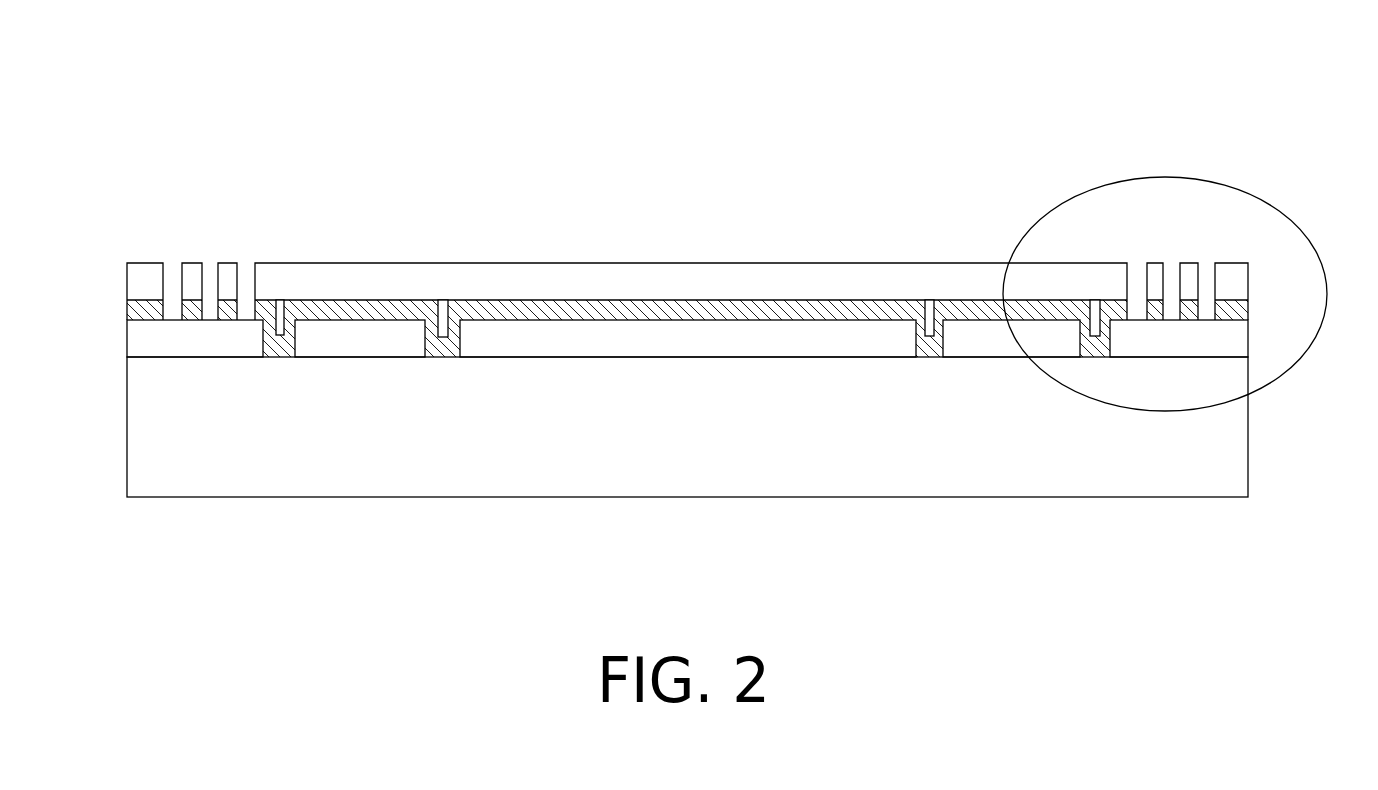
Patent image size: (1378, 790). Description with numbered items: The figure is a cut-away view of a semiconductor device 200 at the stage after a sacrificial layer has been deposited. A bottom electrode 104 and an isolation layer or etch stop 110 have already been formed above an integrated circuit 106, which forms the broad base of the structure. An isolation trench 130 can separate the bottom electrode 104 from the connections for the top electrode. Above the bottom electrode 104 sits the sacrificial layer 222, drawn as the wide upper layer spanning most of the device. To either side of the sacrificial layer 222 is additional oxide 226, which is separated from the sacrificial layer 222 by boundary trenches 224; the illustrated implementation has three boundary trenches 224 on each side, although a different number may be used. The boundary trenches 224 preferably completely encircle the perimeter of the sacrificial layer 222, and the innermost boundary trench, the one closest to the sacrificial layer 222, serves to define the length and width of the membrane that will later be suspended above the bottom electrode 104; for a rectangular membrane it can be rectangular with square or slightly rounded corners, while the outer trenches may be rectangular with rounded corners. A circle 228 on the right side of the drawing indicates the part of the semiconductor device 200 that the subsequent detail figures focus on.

The semiconductor device 200 is at (500, 125).
The bottom electrode 104 is at (955, 357).
The substrate 106 is at (260, 497).
The dielectric layer 110 is at (697, 322).
The isolation trench 130 is at (1093, 358).
The sacrificial layer 222 is at (731, 263).
The boundary trenches 224 is at (241, 250).
The additional oxide 226 is at (1227, 262).
The circle 228 is at (1028, 220).